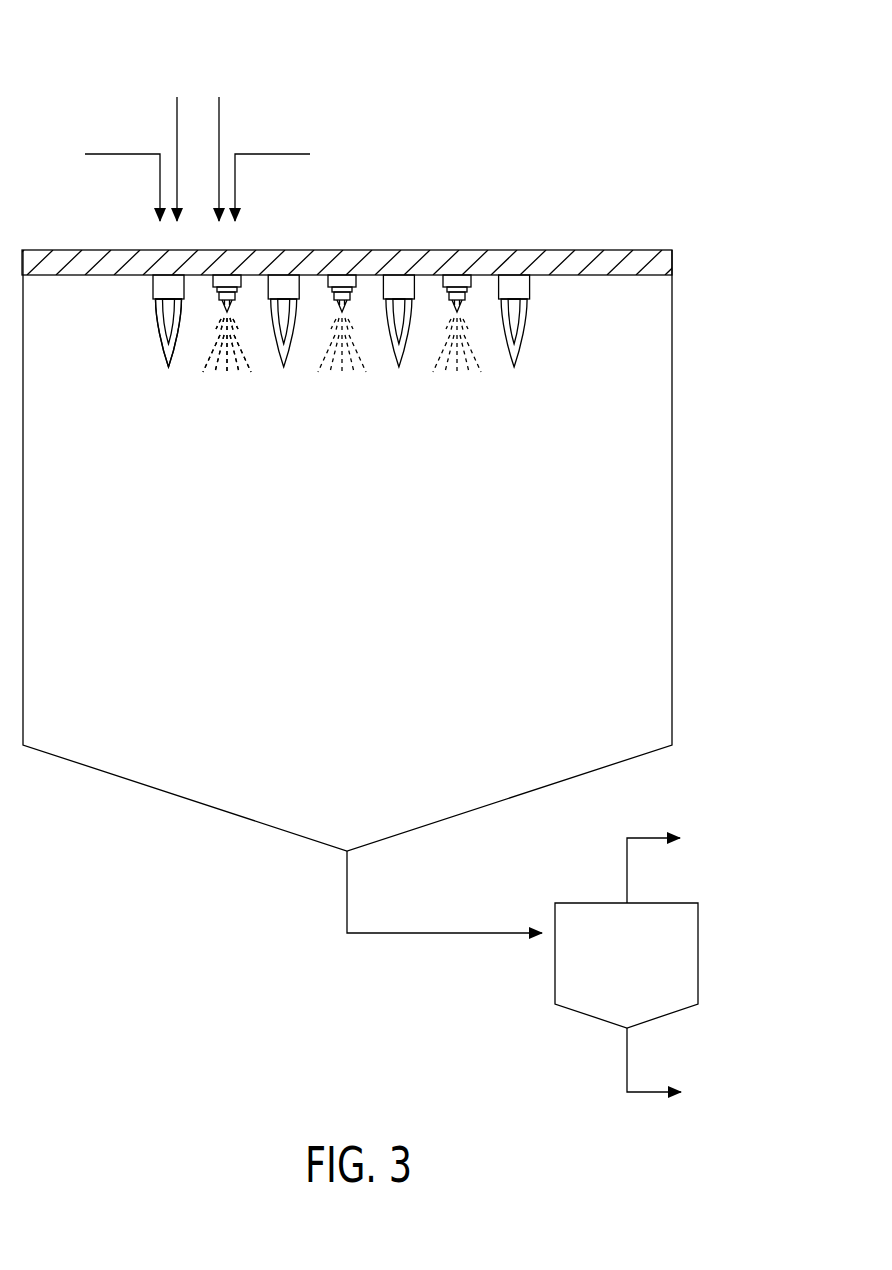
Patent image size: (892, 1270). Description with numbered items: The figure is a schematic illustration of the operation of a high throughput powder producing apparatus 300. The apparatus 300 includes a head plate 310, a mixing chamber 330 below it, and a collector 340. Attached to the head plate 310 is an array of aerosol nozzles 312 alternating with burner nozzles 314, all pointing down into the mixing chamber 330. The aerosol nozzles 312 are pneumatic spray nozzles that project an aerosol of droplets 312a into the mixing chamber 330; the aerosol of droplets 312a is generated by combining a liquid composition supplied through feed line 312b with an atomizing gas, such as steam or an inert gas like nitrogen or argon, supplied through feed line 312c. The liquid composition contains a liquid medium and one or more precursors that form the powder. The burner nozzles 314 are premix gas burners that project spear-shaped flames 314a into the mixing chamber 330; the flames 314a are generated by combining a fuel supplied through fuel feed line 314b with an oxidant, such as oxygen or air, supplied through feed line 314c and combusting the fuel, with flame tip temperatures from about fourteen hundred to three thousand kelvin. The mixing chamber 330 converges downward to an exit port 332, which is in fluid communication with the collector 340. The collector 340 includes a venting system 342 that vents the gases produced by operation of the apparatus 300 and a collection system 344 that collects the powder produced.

The apparatus 300 is at (593, 84).
The head plate 310 is at (663, 262).
The aerosol nozzles 312 is at (340, 283).
The aerosol of droplets 312a is at (212, 389).
The feed line 312b is at (270, 154).
The feed line 312c is at (219, 117).
The burner nozzles 314 is at (163, 285).
The flames 314a is at (160, 352).
The fuel feed line 314b is at (116, 154).
The feed line 314c is at (177, 117).
The mixing chamber 330 is at (672, 452).
The exit port 332 is at (345, 851).
The collector 340 is at (698, 952).
The venting system 342 is at (655, 838).
The collection system 344 is at (657, 1092).